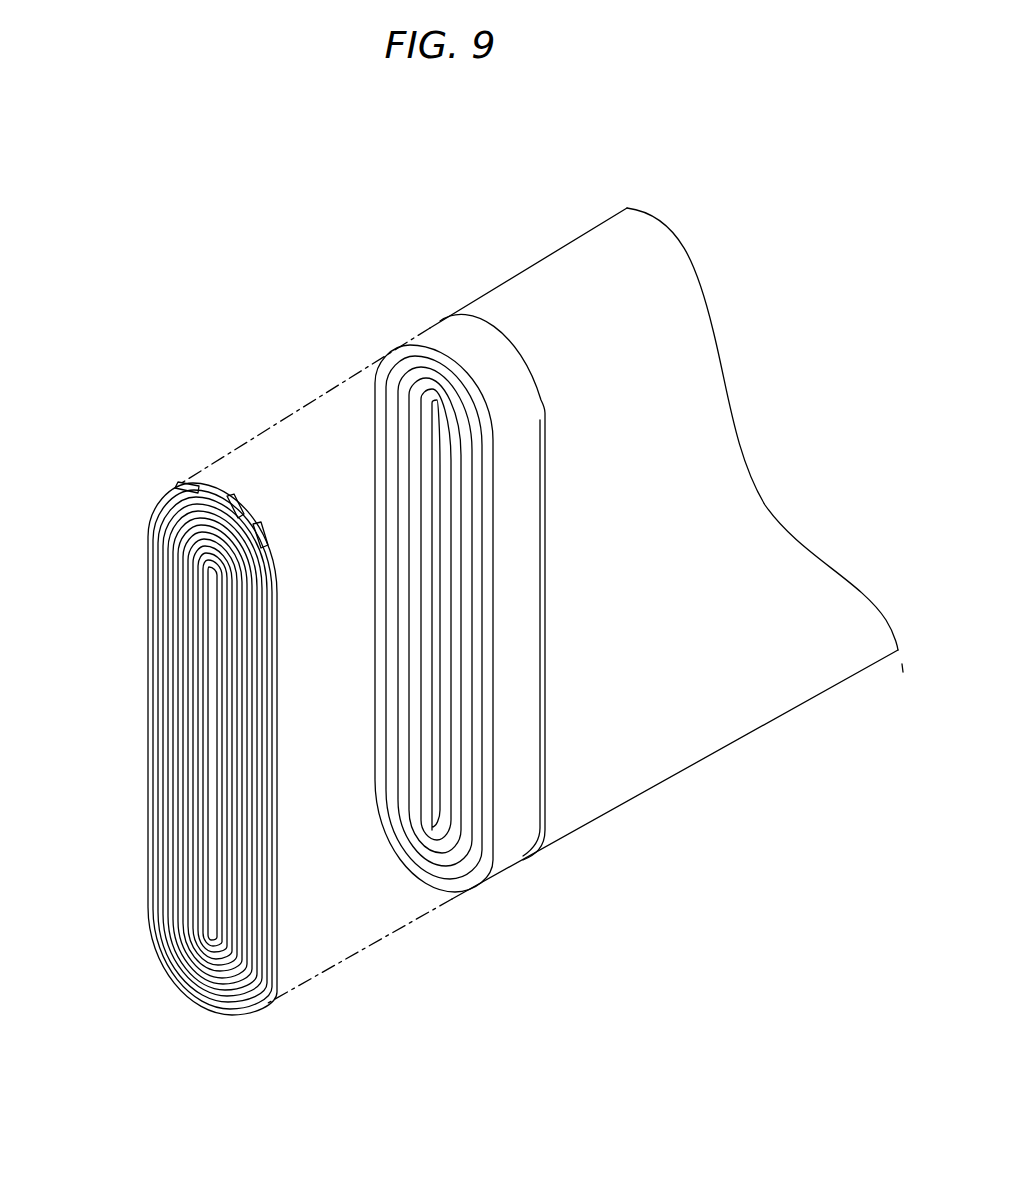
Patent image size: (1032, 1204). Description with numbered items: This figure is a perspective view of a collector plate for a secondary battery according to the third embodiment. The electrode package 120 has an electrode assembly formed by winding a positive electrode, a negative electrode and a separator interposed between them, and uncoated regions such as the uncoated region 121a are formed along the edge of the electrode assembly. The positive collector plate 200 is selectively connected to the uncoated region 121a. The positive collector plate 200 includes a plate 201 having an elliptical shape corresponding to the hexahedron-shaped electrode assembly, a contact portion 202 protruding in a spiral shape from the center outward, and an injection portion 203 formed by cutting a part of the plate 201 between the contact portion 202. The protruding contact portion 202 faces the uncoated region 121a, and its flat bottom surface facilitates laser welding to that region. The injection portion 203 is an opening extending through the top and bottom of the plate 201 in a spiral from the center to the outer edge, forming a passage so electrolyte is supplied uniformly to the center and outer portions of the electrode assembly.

The electrode package 120 is at (683, 733).
The uncoated region 121a is at (507, 848).
The positive collector plate 200 is at (113, 578).
The plate 201 is at (229, 499).
The contact portion 202 is at (262, 530).
The injection portion 203 is at (179, 484).